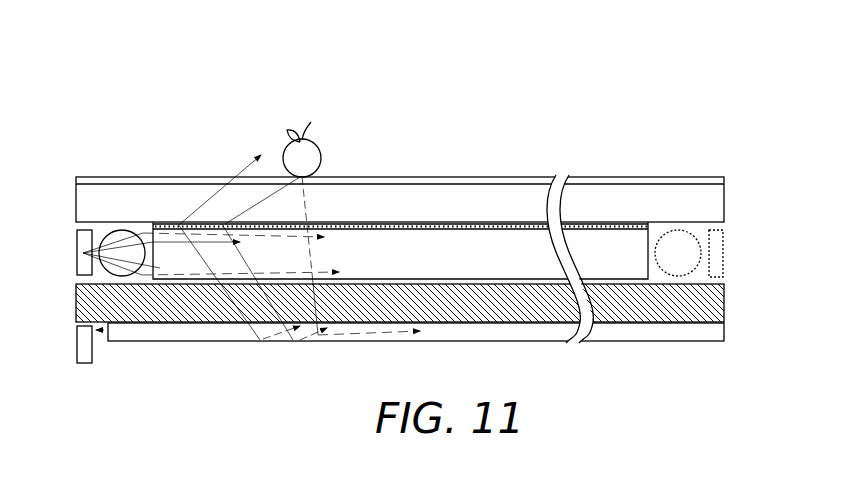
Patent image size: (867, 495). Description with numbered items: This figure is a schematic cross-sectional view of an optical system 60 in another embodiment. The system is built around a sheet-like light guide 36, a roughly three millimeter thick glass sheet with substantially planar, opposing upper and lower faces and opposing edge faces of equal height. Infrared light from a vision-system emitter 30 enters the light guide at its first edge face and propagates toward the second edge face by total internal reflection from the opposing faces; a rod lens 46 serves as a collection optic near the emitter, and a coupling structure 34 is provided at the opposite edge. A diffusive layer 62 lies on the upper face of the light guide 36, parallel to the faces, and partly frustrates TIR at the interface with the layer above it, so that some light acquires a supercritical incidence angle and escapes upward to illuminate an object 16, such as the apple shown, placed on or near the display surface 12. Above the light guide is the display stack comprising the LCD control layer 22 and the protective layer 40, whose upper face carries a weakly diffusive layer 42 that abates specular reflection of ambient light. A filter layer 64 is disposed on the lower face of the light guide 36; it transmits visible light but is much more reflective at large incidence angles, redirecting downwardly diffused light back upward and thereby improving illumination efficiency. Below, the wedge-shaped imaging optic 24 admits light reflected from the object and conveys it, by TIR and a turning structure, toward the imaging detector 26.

The display surface 12 is at (484, 166).
The object 16 is at (312, 168).
The LCD control layer 22 is at (724, 302).
The imaging optic 24 is at (207, 343).
The imaging detector 26 is at (77, 345).
The vision-system emitter 30 is at (77, 233).
The coupling structure 34 is at (743, 222).
The light guide 36 is at (626, 263).
The protective layer 40 is at (68, 178).
The weakly diffusive layer 42 is at (79, 177).
The rod lens 46 is at (134, 263).
The optical system 60 is at (190, 36).
The diffusive layer 62 is at (457, 231).
The filter layer 64 is at (456, 280).